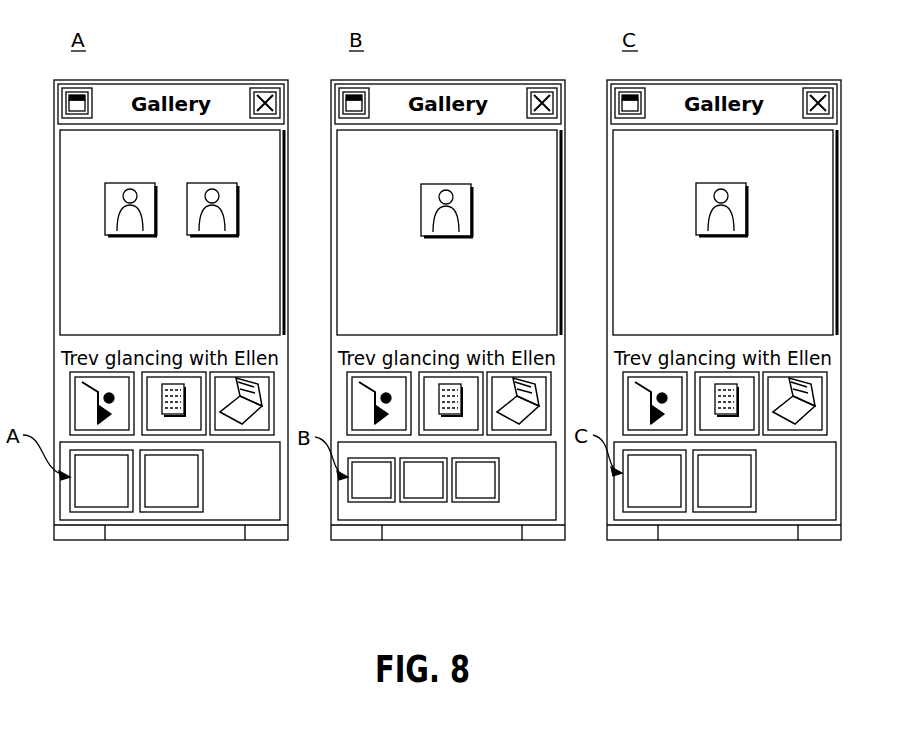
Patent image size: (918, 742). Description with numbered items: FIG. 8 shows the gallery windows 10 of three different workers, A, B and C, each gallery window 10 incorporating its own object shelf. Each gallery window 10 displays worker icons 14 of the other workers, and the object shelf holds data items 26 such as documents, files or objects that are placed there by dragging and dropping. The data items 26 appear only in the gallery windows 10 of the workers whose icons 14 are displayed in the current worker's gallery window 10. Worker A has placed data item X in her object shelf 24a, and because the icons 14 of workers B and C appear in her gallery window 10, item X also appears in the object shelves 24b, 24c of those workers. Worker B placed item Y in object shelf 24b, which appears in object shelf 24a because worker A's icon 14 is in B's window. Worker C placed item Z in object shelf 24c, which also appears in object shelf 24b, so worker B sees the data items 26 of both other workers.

The gallery window 10 is at (187, 83).
The worker's icon 14 is at (126, 184).
The object shelf 24a is at (262, 489).
The object shelf 24b is at (547, 489).
The object shelf 24c is at (820, 489).
The data item 26 is at (108, 498).